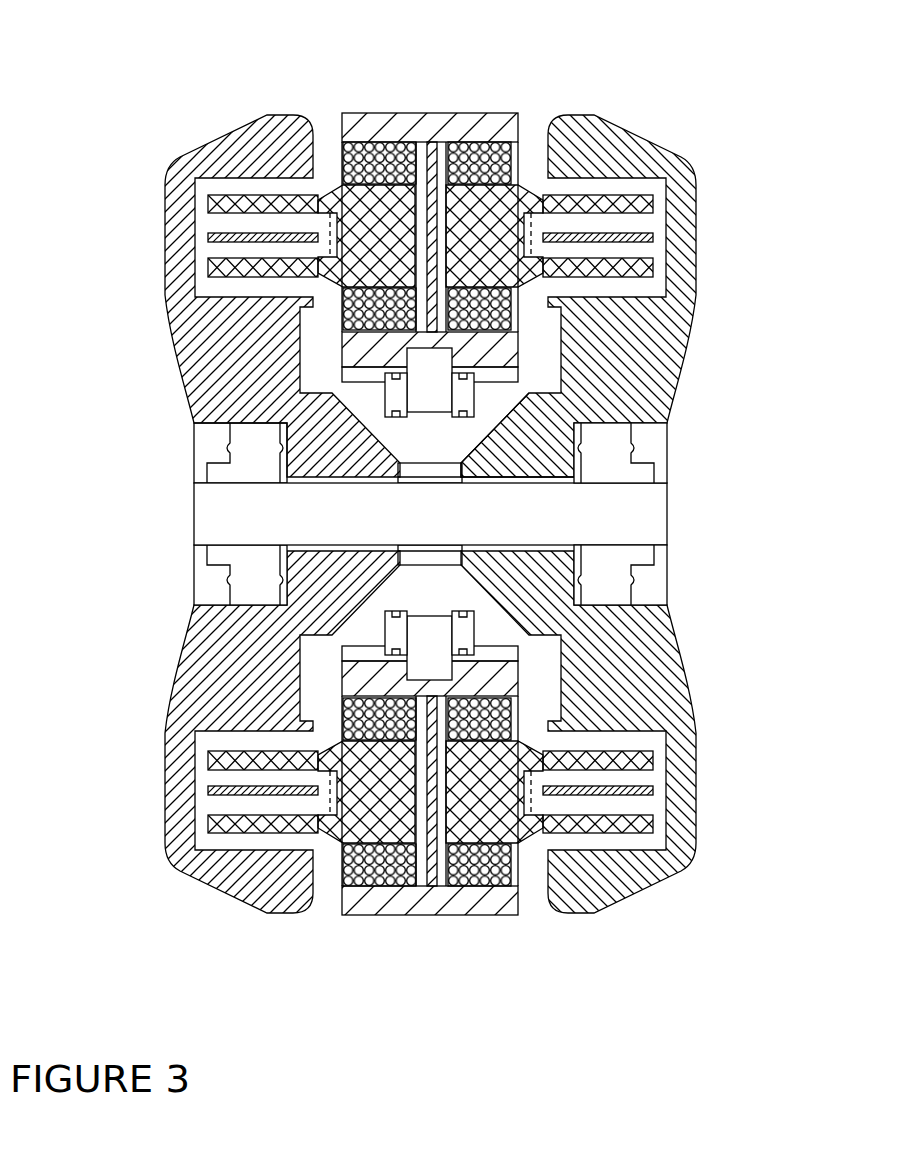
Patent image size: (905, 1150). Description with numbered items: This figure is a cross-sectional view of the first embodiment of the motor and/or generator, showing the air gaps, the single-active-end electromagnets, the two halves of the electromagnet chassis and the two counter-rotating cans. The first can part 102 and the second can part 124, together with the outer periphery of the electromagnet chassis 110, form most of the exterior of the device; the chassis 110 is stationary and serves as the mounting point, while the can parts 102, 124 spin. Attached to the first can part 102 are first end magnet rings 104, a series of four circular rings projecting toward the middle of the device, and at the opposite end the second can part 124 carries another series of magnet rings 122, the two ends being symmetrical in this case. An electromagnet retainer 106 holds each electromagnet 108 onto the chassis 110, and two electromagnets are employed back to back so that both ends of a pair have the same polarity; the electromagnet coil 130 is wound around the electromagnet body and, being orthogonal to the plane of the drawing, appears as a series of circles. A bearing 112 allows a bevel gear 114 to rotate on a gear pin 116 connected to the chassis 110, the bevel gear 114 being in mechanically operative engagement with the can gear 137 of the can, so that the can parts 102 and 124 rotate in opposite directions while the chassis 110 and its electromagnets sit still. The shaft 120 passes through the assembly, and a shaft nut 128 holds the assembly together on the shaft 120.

The first can part 102 is at (593, 147).
The first end magnet rings 104 is at (475, 155).
The electromagnet retainer 106 is at (607, 577).
The electromagnet 108 is at (368, 825).
The electromagnet chassis 110 is at (426, 898).
The bearing 112 is at (467, 643).
The bevel gear 114 is at (363, 397).
The gear pin 116 is at (430, 660).
The shaft 120 is at (218, 518).
The magnet rings 122 is at (260, 223).
The second can part 124 is at (277, 150).
The shaft nut 128 is at (633, 475).
The electromagnet coil 130 is at (467, 162).
The can gear 137 is at (522, 423).